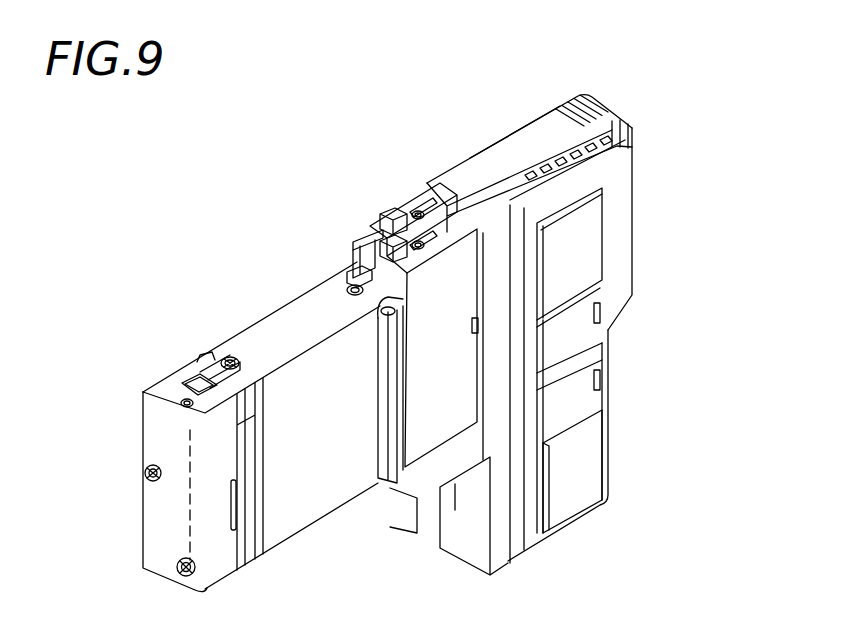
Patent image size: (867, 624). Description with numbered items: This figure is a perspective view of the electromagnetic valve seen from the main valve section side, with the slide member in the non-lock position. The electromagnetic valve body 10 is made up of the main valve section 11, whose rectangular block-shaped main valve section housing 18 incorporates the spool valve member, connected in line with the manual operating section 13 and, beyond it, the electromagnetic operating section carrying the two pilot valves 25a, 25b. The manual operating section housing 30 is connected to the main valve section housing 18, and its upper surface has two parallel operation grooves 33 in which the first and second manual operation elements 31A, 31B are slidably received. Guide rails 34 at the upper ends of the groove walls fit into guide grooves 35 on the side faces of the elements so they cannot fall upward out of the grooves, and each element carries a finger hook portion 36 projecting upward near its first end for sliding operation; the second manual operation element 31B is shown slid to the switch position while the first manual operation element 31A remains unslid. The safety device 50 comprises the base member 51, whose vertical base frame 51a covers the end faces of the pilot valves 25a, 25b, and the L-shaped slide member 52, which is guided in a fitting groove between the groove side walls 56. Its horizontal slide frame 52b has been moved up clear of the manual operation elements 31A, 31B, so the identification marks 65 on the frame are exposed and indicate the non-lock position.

The electromagnetic valve body 10 is at (298, 356).
The main valve section 11 is at (273, 359).
The manual operating section 13 is at (377, 197).
The main valve section housing 18 is at (260, 496).
The manual operating section housing 30 is at (447, 421).
The first manual operation element 31A is at (448, 179).
The second manual operation element 31B is at (416, 159).
The operation groove 33 is at (320, 272).
The guide rail 34 is at (325, 227).
The guide groove 35 is at (336, 221).
The finger hook portion 36 is at (382, 196).
The safety device 50 is at (585, 283).
The base member 51 is at (612, 432).
The vertical base frame 51a is at (659, 421).
The slide member 52 is at (570, 124).
The horizontal slide frame 52b is at (515, 92).
The groove side wall 56 is at (614, 345).
The identification mark 65 is at (619, 158).
The upper pilot valve 25a is at (628, 257).
The lower pilot valve 25b is at (621, 471).